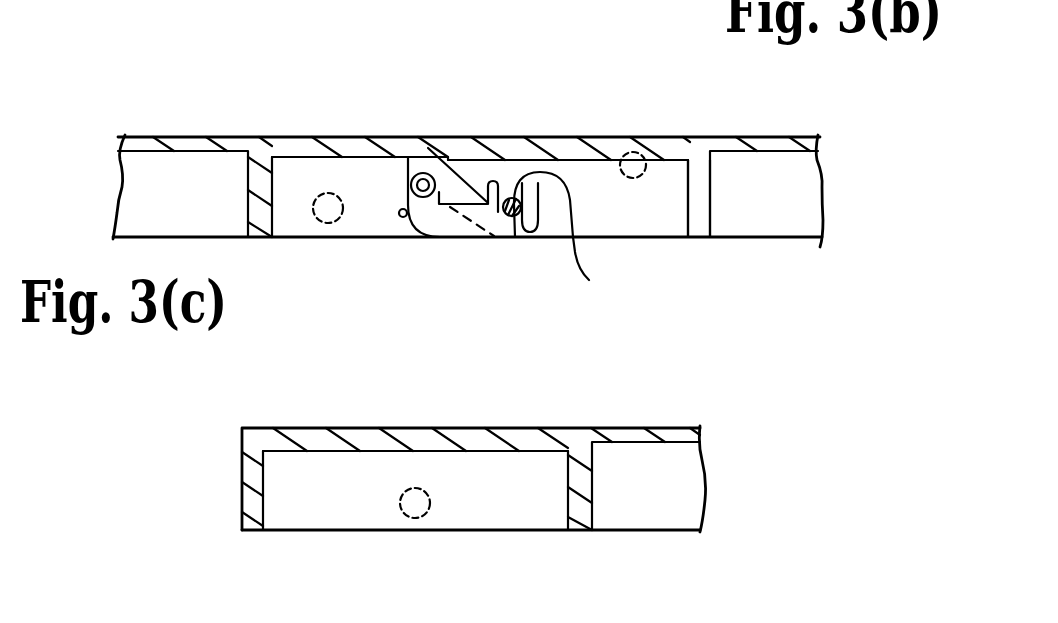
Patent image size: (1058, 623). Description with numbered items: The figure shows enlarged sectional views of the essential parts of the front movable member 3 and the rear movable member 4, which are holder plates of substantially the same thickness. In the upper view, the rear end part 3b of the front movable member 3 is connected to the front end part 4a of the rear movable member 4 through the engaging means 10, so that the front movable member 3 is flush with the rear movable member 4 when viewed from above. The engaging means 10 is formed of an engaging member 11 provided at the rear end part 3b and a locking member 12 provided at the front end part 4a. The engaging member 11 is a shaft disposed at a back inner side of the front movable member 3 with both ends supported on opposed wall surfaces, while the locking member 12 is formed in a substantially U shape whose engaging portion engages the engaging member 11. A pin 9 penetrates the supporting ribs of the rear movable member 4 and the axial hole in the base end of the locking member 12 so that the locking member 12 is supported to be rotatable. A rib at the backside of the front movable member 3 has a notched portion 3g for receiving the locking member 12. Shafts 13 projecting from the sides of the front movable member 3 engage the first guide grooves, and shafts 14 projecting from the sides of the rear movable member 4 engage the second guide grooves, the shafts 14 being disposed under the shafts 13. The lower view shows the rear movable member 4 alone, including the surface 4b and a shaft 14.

In FIG. 3B, the front movable member 3 is at (756, 128).
In FIG. 3B, the rear end part of the front movable member 3b is at (567, 143).
In FIG. 3B, the notched portion 3g is at (702, 203).
In FIG. 3B, the rear movable member 4 is at (182, 128).
In FIG. 3C, the rear movable member 4 is at (290, 418).
In FIG. 3B, the front end part of the rear movable member 4a is at (316, 150).
In FIG. 3C, the inner surface of cover plate 4b is at (352, 440).
In FIG. 3B, the pin 9 is at (427, 176).
In FIG. 3B, the engaging means 10 is at (569, 259).
In FIG. 3B, the engaging member 11 is at (569, 237).
In FIG. 3B, the locking member 12 is at (503, 250).
In FIG. 3B, the shaft 13 is at (647, 150).
In FIG. 3B, the shaft 14 is at (328, 224).
In FIG. 3C, the shaft 14 is at (415, 518).